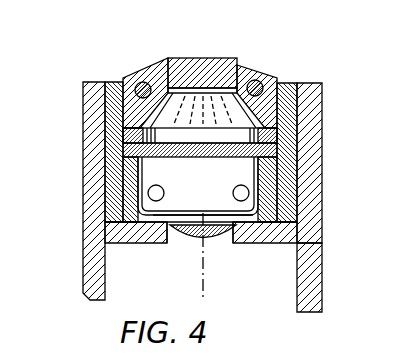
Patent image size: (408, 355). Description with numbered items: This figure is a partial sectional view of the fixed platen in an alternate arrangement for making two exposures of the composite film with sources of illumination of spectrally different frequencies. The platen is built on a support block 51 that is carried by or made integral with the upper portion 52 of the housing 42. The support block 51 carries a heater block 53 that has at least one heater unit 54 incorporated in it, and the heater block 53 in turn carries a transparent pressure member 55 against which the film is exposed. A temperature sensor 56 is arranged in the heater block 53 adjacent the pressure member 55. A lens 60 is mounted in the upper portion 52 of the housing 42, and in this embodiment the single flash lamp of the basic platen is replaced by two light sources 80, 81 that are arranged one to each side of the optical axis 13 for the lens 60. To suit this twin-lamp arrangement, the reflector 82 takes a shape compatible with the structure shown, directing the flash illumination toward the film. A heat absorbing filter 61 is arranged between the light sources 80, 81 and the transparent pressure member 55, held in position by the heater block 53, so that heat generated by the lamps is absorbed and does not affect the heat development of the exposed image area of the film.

The optical axis 13 is at (202, 270).
The housing 42 is at (315, 267).
The support block 51 is at (314, 97).
The upper portion of the housing 52 is at (83, 162).
The heater block 53 is at (123, 97).
The heater unit 54 is at (143, 84).
The transparent pressure member 55 is at (200, 57).
The temperature sensor 56 is at (240, 72).
The lens 60 is at (220, 236).
The heat absorbing filter 61 is at (280, 150).
The light source 80 is at (147, 195).
The light source 81 is at (256, 191).
The reflector 82 is at (250, 213).